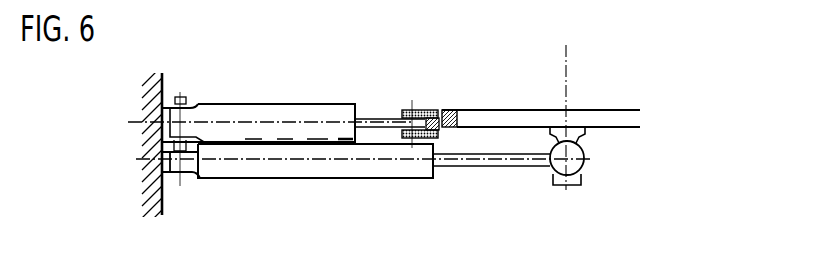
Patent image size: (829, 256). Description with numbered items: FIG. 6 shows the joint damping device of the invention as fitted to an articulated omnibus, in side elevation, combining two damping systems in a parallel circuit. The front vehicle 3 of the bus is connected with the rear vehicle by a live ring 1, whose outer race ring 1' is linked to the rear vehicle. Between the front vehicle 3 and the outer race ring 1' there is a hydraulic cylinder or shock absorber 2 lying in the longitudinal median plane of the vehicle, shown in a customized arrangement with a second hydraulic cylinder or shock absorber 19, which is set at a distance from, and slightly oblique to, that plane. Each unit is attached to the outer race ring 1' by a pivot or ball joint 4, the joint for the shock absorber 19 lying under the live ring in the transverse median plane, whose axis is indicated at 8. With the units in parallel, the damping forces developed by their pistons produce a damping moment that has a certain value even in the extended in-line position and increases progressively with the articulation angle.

The live ring 1 is at (544, 90).
The outer race ring 1' is at (458, 175).
The hydraulic cylinder or shock absorber 2 is at (282, 123).
The front vehicle 3 is at (158, 109).
The pivot or ball joint 4 is at (420, 110).
The pivot axis 8 is at (567, 53).
The hydraulic cylinder or shock absorber 19 is at (287, 167).